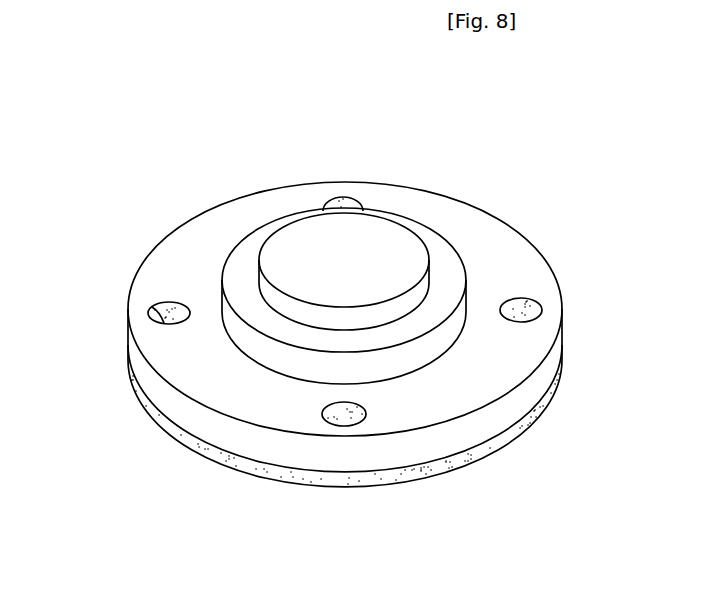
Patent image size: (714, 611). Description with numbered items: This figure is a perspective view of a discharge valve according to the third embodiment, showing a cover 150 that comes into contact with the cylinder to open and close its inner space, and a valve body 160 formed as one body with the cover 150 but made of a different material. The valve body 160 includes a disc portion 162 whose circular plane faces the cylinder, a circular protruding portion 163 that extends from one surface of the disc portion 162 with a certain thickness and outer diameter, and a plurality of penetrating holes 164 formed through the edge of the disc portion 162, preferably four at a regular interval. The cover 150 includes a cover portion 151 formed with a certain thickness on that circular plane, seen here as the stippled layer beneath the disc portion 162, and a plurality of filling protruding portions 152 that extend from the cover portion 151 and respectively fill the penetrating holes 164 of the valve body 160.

The cover 150 is at (341, 354).
The cover portion 151 is at (398, 477).
The filling protruding portion 152 is at (528, 307).
The valve body 160 is at (341, 291).
The disc portion 162 is at (178, 252).
The circular protruding portion 163 is at (246, 248).
The penetrating hole 164 is at (150, 306).